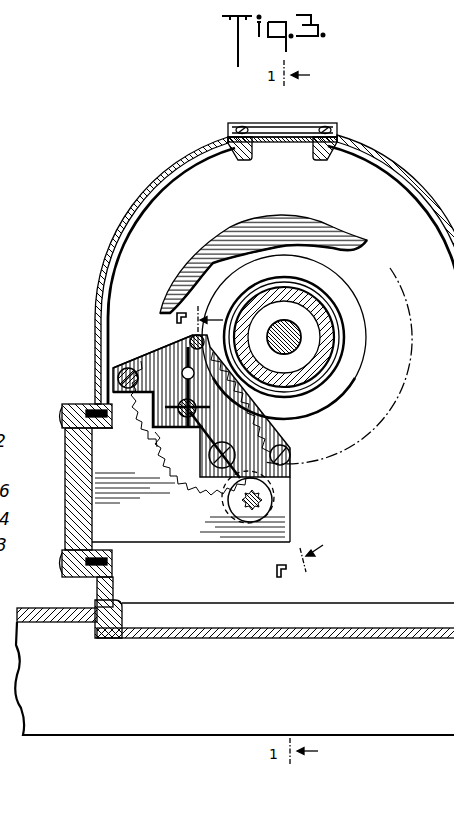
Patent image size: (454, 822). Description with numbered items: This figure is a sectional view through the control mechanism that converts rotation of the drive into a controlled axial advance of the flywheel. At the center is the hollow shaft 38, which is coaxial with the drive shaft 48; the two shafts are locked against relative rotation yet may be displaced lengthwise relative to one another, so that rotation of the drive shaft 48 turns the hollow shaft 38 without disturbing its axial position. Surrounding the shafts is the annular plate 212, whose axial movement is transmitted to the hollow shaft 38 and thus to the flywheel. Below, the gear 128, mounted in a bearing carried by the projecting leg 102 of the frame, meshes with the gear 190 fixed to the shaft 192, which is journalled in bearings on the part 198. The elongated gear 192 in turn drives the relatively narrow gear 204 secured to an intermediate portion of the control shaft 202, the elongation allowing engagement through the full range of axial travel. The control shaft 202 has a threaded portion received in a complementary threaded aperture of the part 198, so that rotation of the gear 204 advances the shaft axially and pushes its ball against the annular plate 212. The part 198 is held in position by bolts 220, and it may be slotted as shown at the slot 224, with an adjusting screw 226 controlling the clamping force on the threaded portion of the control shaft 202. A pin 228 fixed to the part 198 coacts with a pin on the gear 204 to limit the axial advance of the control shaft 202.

The hollow shaft 38 is at (325, 335).
The drive shaft 48 is at (302, 338).
The projecting leg 102 is at (285, 516).
The gear 128 is at (240, 510).
The gear 190 is at (203, 486).
The shaft / elongated gear 192 is at (284, 441).
The part 198 is at (147, 358).
The control shaft 202 is at (141, 430).
The gear 204 is at (160, 441).
The annular plate 212 is at (291, 228).
The bolts 220 is at (185, 335).
The slot 224 is at (117, 380).
The adjusting screw 226 is at (160, 435).
The pin 228 is at (187, 381).